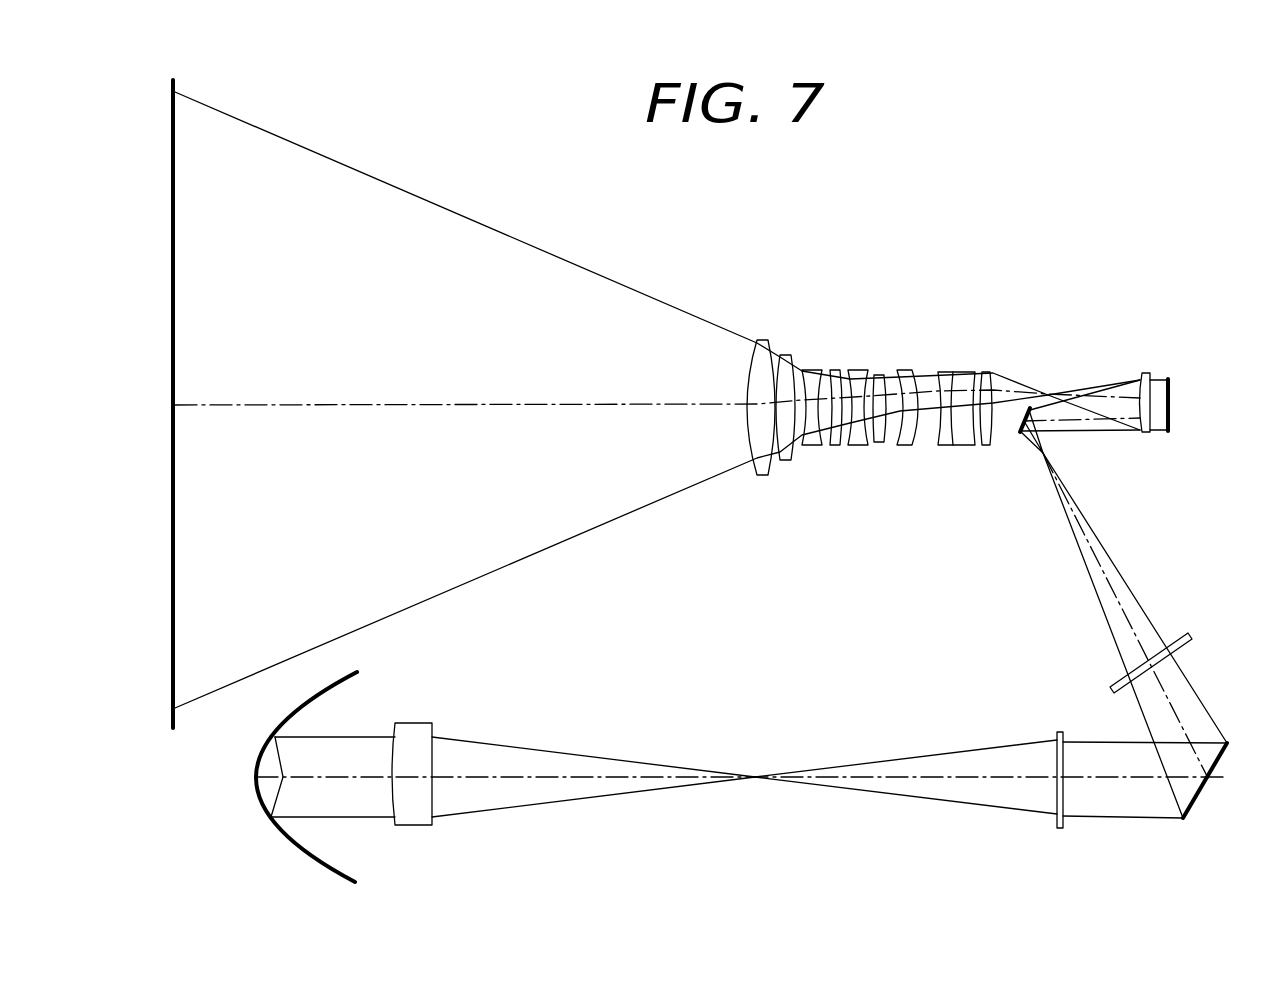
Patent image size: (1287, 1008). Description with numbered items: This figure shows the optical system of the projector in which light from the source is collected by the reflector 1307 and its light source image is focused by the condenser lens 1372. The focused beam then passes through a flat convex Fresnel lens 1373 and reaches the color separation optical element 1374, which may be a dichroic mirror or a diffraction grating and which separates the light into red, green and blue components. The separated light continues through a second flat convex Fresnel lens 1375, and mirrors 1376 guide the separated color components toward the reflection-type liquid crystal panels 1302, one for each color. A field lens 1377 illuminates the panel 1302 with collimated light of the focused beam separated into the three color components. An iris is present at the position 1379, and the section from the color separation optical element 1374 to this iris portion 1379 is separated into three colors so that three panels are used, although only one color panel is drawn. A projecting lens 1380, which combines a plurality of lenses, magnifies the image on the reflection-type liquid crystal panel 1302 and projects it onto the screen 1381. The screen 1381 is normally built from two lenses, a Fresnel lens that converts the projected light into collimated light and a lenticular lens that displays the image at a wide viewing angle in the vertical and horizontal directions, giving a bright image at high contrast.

The screen 1381 is at (175, 252).
The projecting lens 1380 is at (913, 316).
The iris position 1379 is at (1048, 393).
The mirrors 1376 is at (1020, 432).
The field lens 1377 is at (1148, 433).
The liquid crystal panel 1302 is at (1168, 380).
The flat convex Fresnel lens 1375 is at (1125, 677).
The color separation optical element 1374 is at (1200, 797).
The flat convex Fresnel lens 1373 is at (1054, 826).
The condenser lens 1372 is at (418, 723).
The reflector 1307 is at (337, 873).